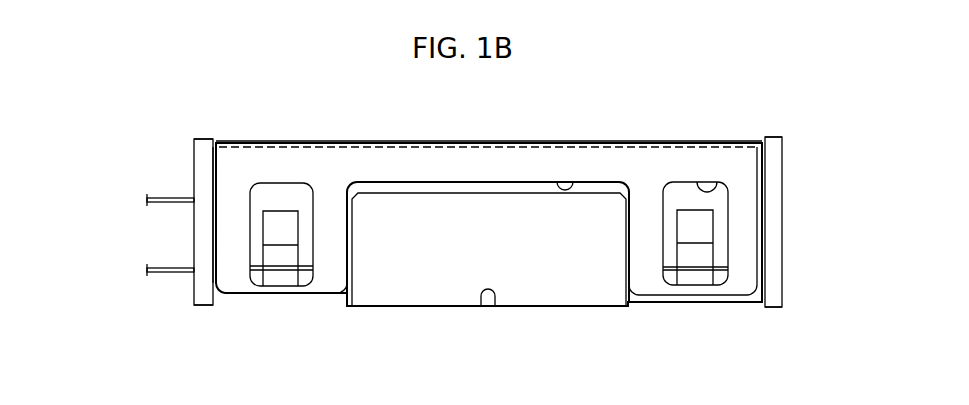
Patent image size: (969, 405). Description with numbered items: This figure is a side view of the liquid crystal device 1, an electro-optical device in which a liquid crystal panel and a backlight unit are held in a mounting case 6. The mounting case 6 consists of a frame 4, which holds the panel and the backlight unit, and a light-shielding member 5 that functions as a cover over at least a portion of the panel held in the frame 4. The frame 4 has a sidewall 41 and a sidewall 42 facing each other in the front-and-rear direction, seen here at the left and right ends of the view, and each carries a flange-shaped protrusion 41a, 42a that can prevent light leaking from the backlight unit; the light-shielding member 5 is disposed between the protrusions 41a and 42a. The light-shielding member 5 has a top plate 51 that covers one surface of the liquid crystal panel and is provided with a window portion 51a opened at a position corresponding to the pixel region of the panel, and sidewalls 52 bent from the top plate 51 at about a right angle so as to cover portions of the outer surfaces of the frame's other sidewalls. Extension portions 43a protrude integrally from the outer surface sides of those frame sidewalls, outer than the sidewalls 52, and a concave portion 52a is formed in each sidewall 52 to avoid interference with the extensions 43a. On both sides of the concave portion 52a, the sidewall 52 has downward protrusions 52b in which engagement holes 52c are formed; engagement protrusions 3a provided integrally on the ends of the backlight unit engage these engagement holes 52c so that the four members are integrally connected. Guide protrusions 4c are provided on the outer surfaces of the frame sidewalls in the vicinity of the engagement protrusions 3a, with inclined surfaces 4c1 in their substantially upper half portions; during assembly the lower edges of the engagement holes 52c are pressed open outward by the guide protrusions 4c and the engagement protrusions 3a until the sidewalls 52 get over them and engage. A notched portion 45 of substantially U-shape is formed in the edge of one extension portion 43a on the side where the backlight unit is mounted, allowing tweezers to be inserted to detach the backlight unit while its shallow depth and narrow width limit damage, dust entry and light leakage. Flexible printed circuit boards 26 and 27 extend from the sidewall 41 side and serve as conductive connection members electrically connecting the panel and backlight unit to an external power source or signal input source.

The liquid crystal device 1 is at (253, 103).
The frame 4 is at (786, 163).
The light-shielding member 5 is at (407, 175).
The mounting case 6 is at (302, 142).
The flexible printed circuit board 26 is at (165, 197).
The flexible printed circuit board 27 is at (158, 273).
The engagement protrusion 3a is at (272, 298).
The guide protrusion 4c is at (288, 258).
The inclined surface 4c1 is at (278, 229).
The sidewall 41 is at (201, 152).
The protrusion 41a is at (205, 141).
The sidewall 42 is at (773, 203).
The protrusion 42a is at (773, 140).
The extension portion 43a is at (548, 280).
The notched portion 45 is at (488, 303).
The top plate 51 is at (352, 142).
The window portion 51a is at (672, 146).
The sidewall 52 is at (515, 158).
The concave portion 52a is at (573, 185).
The downward protrusion 52b is at (333, 278).
The engagement hole 52c is at (710, 192).